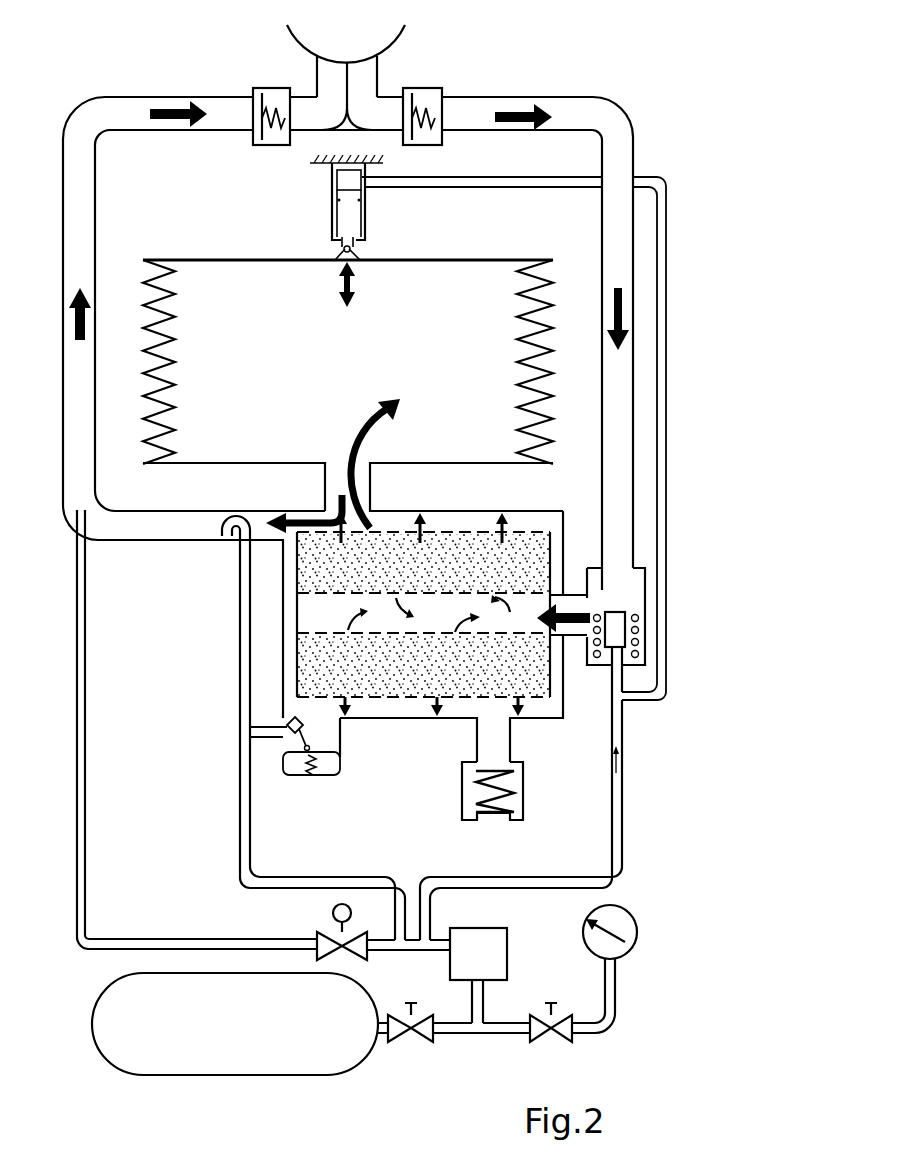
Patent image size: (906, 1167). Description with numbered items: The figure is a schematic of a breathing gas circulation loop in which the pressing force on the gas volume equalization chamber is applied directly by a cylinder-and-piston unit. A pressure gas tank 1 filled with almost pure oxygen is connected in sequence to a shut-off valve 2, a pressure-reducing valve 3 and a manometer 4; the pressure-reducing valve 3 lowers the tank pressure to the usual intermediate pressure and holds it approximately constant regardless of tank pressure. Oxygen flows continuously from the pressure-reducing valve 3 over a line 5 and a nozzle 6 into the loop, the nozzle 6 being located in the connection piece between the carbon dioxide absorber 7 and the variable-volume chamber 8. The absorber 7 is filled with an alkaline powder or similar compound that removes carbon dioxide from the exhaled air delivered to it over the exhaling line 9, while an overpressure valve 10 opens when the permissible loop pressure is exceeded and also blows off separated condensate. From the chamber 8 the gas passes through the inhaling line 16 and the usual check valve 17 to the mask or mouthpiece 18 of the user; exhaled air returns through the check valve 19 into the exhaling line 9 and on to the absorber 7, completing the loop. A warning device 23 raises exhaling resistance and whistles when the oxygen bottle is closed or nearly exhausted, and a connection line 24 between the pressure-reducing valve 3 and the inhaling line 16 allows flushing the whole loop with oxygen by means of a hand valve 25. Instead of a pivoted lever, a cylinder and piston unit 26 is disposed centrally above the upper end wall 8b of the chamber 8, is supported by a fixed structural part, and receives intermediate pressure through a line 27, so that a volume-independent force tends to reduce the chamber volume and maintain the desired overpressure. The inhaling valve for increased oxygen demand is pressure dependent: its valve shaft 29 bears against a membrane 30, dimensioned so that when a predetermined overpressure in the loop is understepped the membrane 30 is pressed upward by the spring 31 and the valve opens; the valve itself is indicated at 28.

The pressure gas tank 1 is at (165, 1060).
The shut-off valve 2 is at (421, 1042).
The pressure-reducing valve 3 is at (507, 953).
The manometer 4 is at (638, 935).
The line 5 is at (240, 620).
The nozzle 6 is at (226, 527).
The carbon dioxide absorber 7 is at (543, 553).
The variable-volume chamber 8 is at (353, 376).
The upper end wall 8b is at (447, 260).
The exhaling line 9 is at (605, 428).
The overpressure valve 10 is at (525, 786).
The inhaling line 16 is at (67, 158).
The check valve 17 is at (270, 88).
The mask or mouthpiece 18 is at (357, 49).
The check valve 19 is at (425, 88).
The warning device 23 is at (620, 637).
The connection line 24 is at (75, 894).
The hand valve 25 is at (328, 932).
The cylinder and piston unit 26 is at (348, 207).
The line 27 is at (665, 247).
The valve 28 is at (289, 723).
The valve shaft 29 is at (283, 753).
The membrane 30 is at (292, 765).
The spring 31 is at (318, 770).